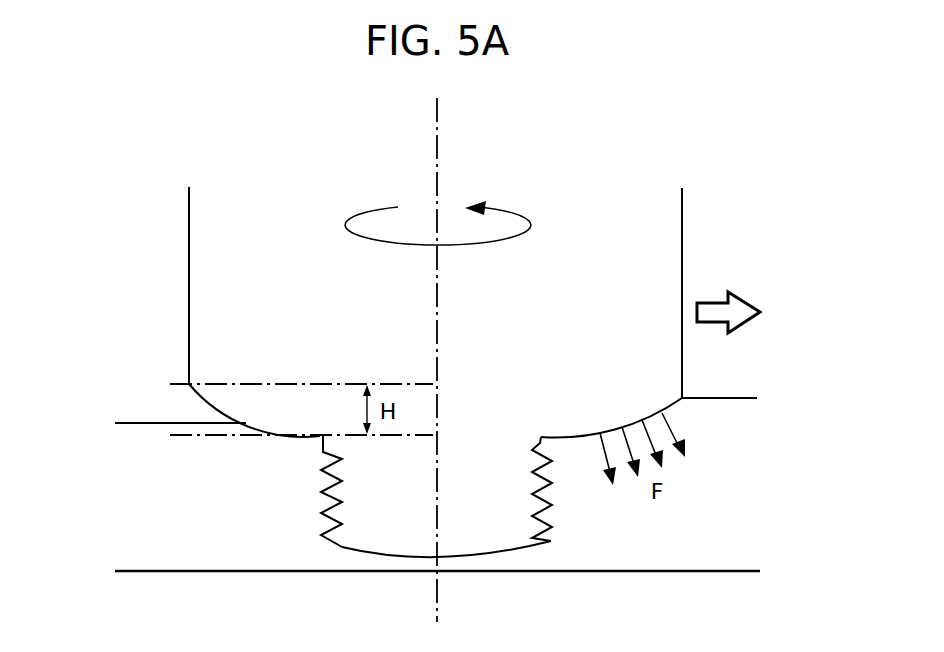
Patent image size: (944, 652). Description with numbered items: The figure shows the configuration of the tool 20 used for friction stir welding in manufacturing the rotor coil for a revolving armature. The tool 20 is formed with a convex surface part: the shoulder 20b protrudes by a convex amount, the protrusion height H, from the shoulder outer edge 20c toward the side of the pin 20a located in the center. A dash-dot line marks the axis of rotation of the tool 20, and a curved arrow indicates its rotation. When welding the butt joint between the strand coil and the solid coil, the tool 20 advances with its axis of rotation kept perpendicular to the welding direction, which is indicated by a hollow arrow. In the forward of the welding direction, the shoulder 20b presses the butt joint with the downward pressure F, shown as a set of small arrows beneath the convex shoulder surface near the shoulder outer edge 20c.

The tool 20 is at (732, 228).
The pin 20a is at (395, 507).
The shoulder 20b is at (268, 430).
The shoulder outer edge 20c is at (681, 398).